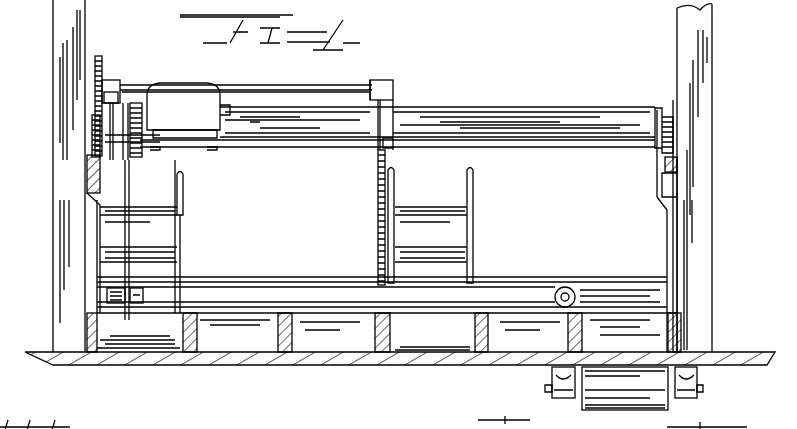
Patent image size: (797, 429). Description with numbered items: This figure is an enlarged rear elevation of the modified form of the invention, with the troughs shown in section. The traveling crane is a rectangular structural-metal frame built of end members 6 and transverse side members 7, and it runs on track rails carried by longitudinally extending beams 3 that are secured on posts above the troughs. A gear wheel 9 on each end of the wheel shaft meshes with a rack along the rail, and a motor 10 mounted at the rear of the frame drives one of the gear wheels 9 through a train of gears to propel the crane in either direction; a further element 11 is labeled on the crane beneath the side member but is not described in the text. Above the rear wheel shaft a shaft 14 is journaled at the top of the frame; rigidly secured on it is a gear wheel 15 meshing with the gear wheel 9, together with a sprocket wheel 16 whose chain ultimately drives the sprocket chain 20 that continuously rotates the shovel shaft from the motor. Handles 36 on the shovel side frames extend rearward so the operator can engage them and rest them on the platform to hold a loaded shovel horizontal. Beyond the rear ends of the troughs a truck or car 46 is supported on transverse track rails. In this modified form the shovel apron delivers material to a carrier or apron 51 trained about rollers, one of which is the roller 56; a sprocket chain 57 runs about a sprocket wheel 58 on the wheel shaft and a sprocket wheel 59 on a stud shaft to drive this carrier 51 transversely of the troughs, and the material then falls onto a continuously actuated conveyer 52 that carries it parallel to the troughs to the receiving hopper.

The longitudinally extending beam 3 is at (88, 172).
The end member 6 is at (113, 120).
The transverse side member 7 is at (478, 85).
The gear wheel 9 is at (95, 132).
The motor 10 is at (185, 98).
The shaft 11 is at (353, 138).
The shaft 14 is at (313, 80).
The gear wheel 15 is at (102, 67).
The sprocket wheel 16 is at (373, 79).
The sprocket chain 20 is at (378, 192).
The handle 36 is at (182, 192).
The truck or car 46 is at (33, 139).
The carrier or apron 51 is at (520, 280).
The conveyer 52 is at (658, 412).
The roller 56 is at (578, 290).
The sprocket chain 57 is at (130, 242).
The sprocket wheel 58 is at (133, 158).
The sprocket wheel 59 is at (127, 315).